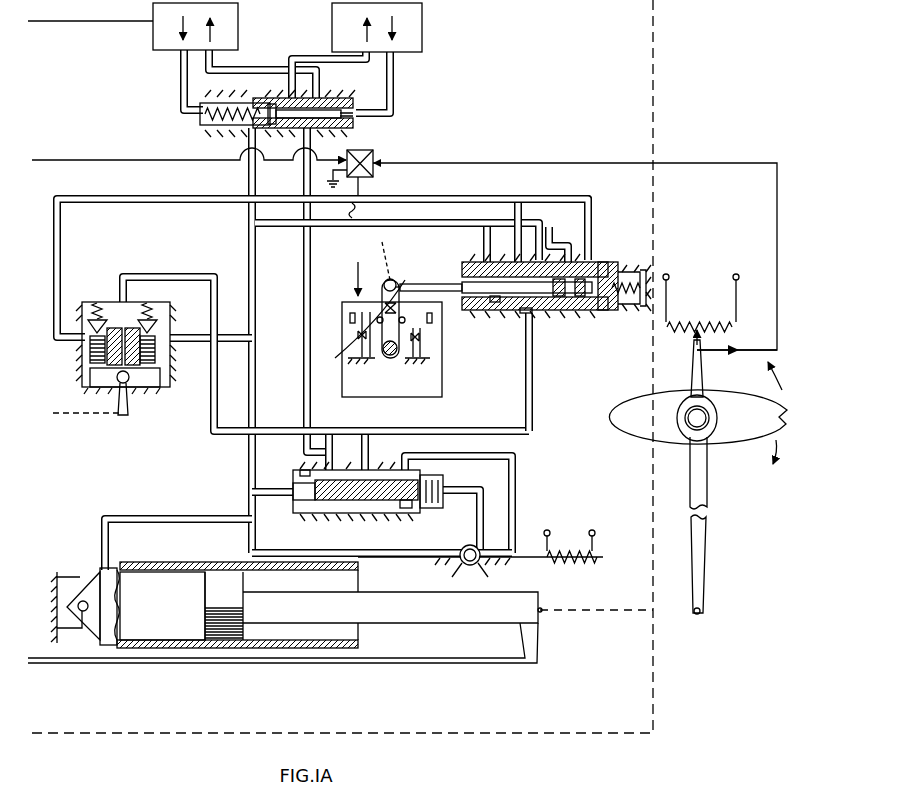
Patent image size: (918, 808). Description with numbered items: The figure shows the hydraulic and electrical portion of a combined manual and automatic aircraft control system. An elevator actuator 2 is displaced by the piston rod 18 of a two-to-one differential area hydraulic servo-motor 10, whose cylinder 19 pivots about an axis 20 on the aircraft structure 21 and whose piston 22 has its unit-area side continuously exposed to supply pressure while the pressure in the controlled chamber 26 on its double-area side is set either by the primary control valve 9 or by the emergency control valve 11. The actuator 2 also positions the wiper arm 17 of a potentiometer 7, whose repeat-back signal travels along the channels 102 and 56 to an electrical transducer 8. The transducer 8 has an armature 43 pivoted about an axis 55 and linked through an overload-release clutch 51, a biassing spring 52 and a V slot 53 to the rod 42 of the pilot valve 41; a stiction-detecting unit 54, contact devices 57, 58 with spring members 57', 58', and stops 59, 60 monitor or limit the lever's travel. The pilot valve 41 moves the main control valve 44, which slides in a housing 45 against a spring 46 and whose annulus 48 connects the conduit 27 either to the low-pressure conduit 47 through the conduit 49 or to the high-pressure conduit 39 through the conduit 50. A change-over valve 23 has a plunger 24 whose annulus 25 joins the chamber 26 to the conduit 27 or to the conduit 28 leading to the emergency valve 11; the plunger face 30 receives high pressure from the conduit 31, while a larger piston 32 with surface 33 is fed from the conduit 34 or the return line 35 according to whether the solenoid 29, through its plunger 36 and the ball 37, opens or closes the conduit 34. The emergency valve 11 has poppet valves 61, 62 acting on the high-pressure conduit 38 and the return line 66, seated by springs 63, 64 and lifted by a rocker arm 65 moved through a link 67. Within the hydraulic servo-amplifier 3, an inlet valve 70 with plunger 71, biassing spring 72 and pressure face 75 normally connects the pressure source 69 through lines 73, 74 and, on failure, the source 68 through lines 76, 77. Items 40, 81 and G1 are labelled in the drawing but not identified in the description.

The elevator actuator 2 is at (715, 450).
The hydraulic servo-amplifier 3 is at (558, 734).
The potentiometer 7 is at (697, 323).
The electrical transducer 8 is at (440, 392).
The primary control valve 9 is at (606, 260).
The two-to-one differential area hydraulic servo-motor 10 is at (190, 648).
The emergency control valve 11 is at (112, 302).
The wiper arm 17 is at (699, 360).
The piston rod 18 is at (420, 623).
The cylinder 19 is at (100, 575).
The axis 20 is at (80, 630).
The aircraft structure 21 is at (50, 583).
The piston 22 is at (228, 648).
The change-over valve 23 is at (390, 513).
The plunger 24 is at (332, 505).
The annulus 25 is at (360, 505).
The controlled pressure chamber 26 is at (156, 614).
The conduit 27 is at (533, 386).
The conduit 28 is at (230, 436).
The solenoid 29 is at (550, 531).
The face 30 is at (302, 505).
The conduit 31 is at (256, 380).
The piston 32 is at (424, 515).
The surface 33 is at (445, 500).
The conduit 34 is at (411, 558).
The return line 35 is at (516, 488).
The plunger 36 is at (558, 566).
The ball 37 is at (460, 566).
The conduit 38 is at (193, 337).
The conduit 39 is at (425, 227).
The solenoid 40 is at (444, 480).
The pilot valve 41 is at (568, 312).
The rod 42 is at (514, 313).
The armature 43 is at (404, 285).
The main control valve 44 is at (548, 312).
The housing 45 is at (602, 312).
The spring 46 is at (632, 288).
The conduit 47 is at (494, 195).
The annulus 48 is at (532, 335).
The conduit 49 is at (535, 219).
The conduit 50 is at (549, 233).
The overload-release clutch 51 is at (383, 253).
The biassing spring 52 is at (396, 280).
The V slot 53 is at (356, 280).
The pilot-valve stiction detecting unit 54 is at (340, 356).
The pivot axis 55 is at (384, 355).
The error-signal line 56 is at (356, 238).
The contact device 57 is at (440, 355).
The spring member 57' is at (441, 350).
The contact device 58 is at (341, 334).
The spring member 58' is at (338, 320).
The stop 59 is at (433, 322).
The stop 60 is at (352, 310).
The poppet valve 61 is at (158, 352).
The poppet valve 62 is at (90, 352).
The spring 63 is at (158, 310).
The spring 64 is at (92, 308).
The rocker arm 65 is at (128, 404).
The return line 66 is at (196, 193).
The link 67 is at (62, 411).
The pressure source 68 is at (422, 30).
The pressure source 69 is at (153, 34).
The inlet valve 70 is at (200, 128).
The plunger 71 is at (372, 142).
The biassing spring 72 is at (230, 126).
The high-pressure line 73 is at (180, 78).
The return line 74 is at (238, 70).
The face 75 is at (352, 121).
The high-pressure line 76 is at (394, 78).
The return line 77 is at (344, 62).
The base 81 is at (283, 656).
The channel 102 is at (732, 164).
The governor G1 is at (374, 271).